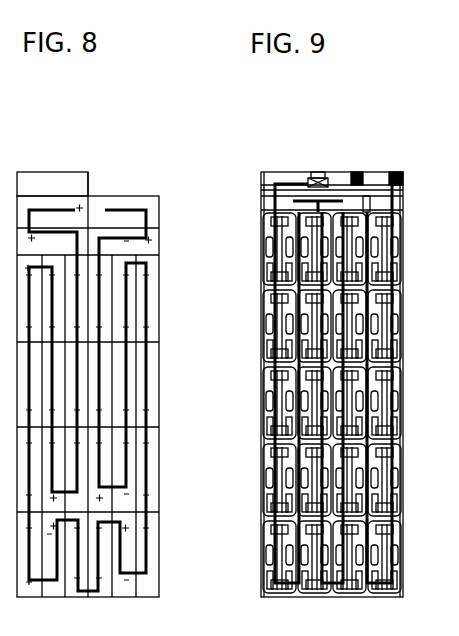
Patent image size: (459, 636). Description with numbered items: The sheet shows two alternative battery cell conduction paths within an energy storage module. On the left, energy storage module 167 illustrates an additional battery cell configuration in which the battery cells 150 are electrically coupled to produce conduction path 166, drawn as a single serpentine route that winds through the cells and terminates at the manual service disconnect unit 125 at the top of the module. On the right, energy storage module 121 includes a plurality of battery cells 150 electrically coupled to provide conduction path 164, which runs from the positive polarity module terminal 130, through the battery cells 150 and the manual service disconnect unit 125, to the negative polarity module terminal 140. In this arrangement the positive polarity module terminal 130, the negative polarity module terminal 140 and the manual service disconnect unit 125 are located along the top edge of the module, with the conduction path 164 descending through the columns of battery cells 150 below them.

In FIG. 8, the energy storage module 167 is at (92, 111).
In FIG. 8, the manual service disconnect unit 125 is at (49, 172).
In FIG. 9, the manual service disconnect unit 125 is at (316, 172).
In FIG. 8, the conduction path 166 is at (148, 372).
In FIG. 8, the battery cells 150 is at (153, 249).
In FIG. 9, the battery cells 150 is at (262, 495).
In FIG. 9, the energy storage module 121 is at (330, 120).
In FIG. 9, the negative polarity module terminal 140 is at (358, 170).
In FIG. 9, the positive polarity module terminal 130 is at (398, 178).
In FIG. 9, the conduction path 164 is at (262, 418).